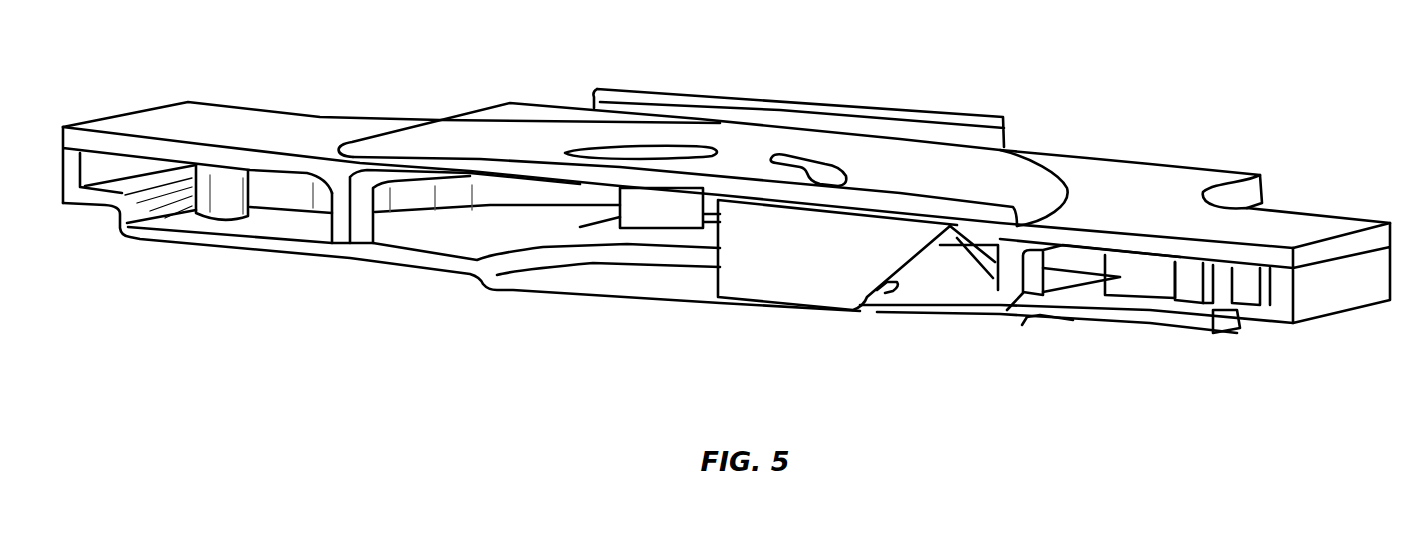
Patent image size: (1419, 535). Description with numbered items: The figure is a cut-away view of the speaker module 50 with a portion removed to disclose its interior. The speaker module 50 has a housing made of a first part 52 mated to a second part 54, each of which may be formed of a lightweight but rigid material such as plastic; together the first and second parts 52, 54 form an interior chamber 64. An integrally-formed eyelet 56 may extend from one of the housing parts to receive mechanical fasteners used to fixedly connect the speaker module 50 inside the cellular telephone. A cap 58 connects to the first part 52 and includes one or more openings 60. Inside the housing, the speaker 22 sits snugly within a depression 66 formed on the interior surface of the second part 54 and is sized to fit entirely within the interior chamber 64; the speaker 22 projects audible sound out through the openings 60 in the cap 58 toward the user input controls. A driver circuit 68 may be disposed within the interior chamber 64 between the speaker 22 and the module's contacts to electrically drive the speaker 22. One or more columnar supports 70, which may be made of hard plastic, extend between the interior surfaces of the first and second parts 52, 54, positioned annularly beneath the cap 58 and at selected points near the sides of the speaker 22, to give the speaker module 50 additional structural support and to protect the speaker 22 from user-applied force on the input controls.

The speaker 22 is at (824, 250).
The speaker module 50 is at (1122, 49).
The first part 52 is at (1170, 178).
The second part 54 is at (1327, 293).
The eyelet 56 is at (798, 118).
The cap 58 is at (1000, 182).
The opening 60 is at (602, 150).
The interior chamber 64 is at (593, 229).
The depression 66 is at (640, 275).
The driver circuit 68 is at (1133, 278).
The columnar support 70 is at (593, 229).